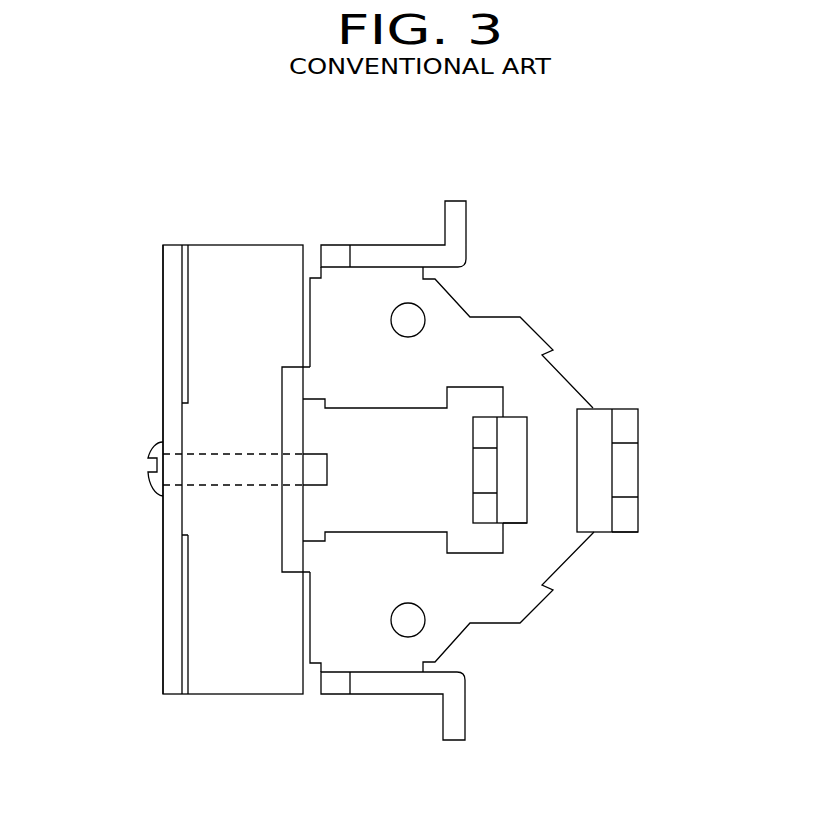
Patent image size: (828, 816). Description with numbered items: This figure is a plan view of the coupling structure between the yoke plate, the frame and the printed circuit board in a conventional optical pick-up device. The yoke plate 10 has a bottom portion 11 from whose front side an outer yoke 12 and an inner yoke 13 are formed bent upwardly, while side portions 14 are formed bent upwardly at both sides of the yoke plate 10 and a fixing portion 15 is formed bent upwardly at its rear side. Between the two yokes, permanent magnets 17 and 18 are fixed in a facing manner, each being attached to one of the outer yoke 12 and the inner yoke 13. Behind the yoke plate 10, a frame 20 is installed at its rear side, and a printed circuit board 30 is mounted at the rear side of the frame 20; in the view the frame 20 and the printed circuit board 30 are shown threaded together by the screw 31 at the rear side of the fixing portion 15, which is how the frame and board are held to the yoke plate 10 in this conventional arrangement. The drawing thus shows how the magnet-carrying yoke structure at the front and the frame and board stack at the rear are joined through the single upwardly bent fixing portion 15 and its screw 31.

The yoke plate 10 is at (605, 299).
The bottom portion 11 is at (485, 326).
The outer yoke 12 is at (628, 415).
The inner yoke 13 is at (482, 420).
The side portion 14 is at (392, 687).
The fixing portion 15 is at (287, 391).
The permanent magnet 17 is at (603, 530).
The permanent magnet 18 is at (512, 524).
The frame 20 is at (205, 252).
The printed circuit board 30 is at (166, 636).
The screw 31 is at (150, 458).